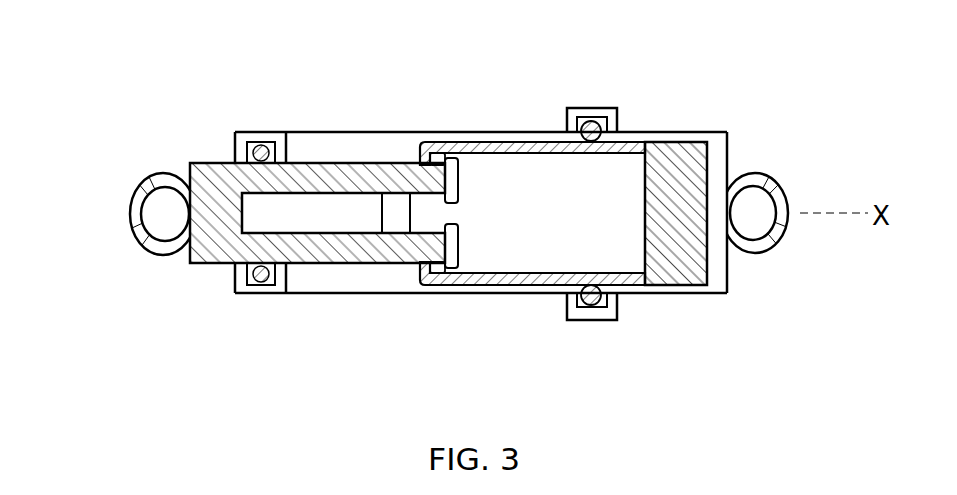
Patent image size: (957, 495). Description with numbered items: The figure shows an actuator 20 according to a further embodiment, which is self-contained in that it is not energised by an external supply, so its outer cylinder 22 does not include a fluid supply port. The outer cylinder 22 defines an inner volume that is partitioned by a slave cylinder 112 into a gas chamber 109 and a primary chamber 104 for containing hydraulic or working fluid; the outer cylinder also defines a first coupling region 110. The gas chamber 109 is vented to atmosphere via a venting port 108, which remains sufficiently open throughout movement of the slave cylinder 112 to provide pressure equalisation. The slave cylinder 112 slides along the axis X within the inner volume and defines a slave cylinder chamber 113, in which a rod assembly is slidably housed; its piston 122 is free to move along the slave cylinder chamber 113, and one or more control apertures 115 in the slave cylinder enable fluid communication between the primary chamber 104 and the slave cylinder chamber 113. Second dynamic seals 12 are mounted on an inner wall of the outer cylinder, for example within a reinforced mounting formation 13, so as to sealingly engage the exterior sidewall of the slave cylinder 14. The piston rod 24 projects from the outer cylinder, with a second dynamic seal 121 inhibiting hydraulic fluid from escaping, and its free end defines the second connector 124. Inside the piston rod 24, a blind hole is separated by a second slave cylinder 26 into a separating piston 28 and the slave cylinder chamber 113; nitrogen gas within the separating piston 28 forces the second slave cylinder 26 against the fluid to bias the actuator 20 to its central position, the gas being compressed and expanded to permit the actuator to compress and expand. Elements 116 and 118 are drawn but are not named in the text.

The actuator 20 is at (757, 93).
The outer cylinder 22 is at (482, 133).
The piston rod 24 is at (287, 257).
The second slave cylinder 26 is at (395, 210).
The separating piston 28 is at (285, 210).
The second dynamic seal 12 is at (593, 108).
The reinforced mounting formation 13 is at (586, 122).
The slave cylinder 14 is at (672, 290).
The primary chamber 104 is at (385, 145).
The venting port 108 is at (715, 293).
The gas chamber 109 is at (730, 265).
The first coupling region 110 is at (767, 173).
The slave cylinder 112 is at (502, 292).
The slave cylinder chamber 113 is at (623, 220).
The control aperture 115 is at (548, 141).
The second sleeve portion 116 is at (623, 141).
The lower sleeve wall 118 is at (415, 272).
The second dynamic seal 121 is at (238, 158).
The piston 122 is at (448, 172).
The second connector 124 is at (125, 211).